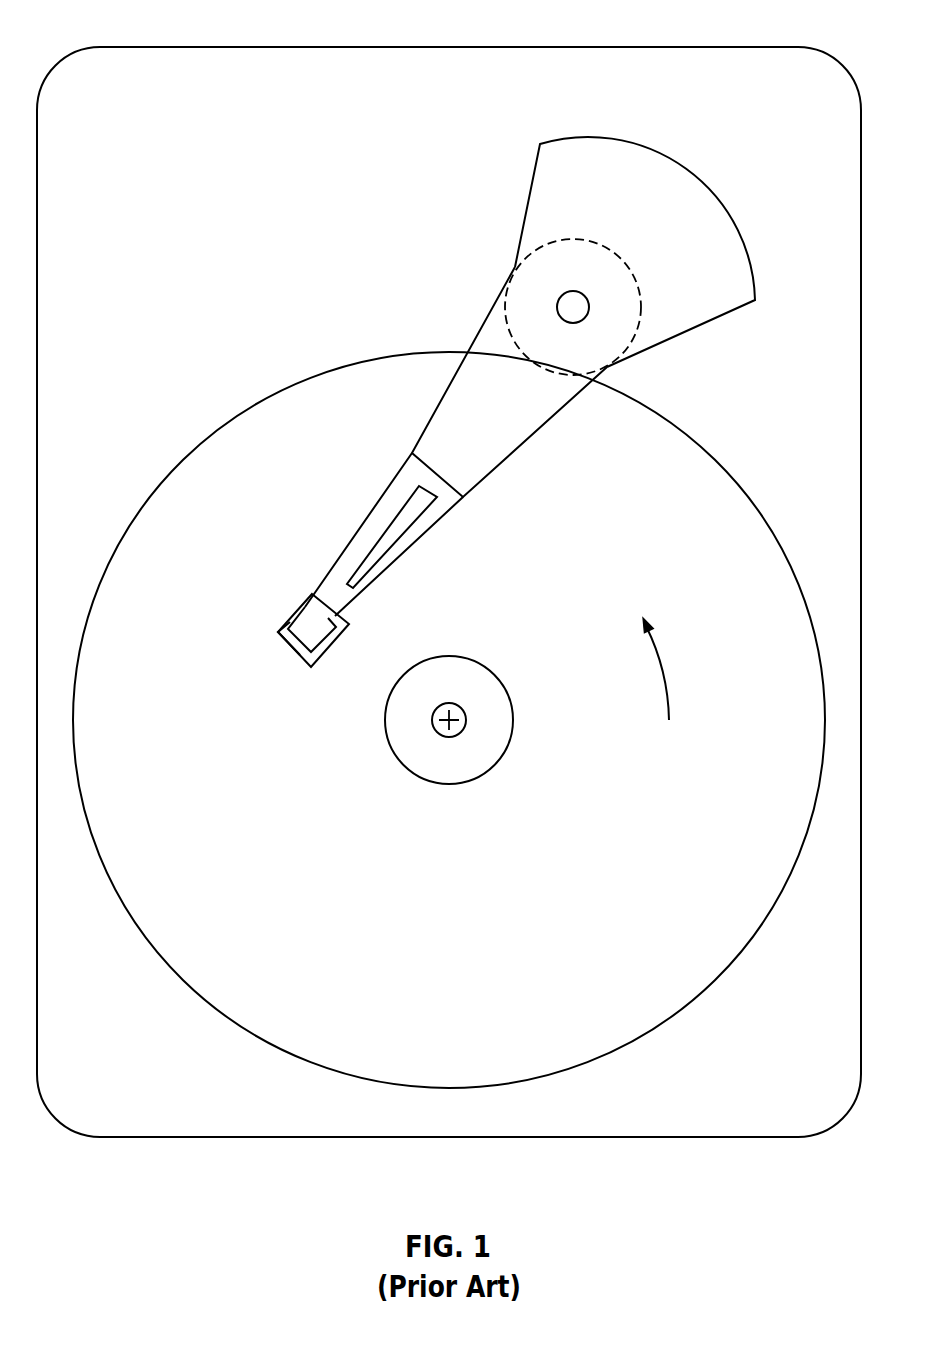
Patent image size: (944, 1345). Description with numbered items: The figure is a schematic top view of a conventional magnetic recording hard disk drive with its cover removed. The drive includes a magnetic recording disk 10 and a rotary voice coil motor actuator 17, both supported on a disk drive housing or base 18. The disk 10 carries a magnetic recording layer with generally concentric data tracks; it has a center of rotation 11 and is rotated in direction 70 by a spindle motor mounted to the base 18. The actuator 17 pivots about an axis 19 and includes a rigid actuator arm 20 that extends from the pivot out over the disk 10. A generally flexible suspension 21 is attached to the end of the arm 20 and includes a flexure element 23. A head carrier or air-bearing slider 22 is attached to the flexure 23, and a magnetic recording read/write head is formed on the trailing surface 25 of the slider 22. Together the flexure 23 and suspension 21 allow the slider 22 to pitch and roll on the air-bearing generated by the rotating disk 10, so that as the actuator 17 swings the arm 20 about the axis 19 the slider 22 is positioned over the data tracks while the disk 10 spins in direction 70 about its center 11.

The magnetic recording disk 10 is at (694, 1000).
The center of rotation 11 is at (466, 708).
The rotary voice coil motor (VCM) actuator 17 is at (687, 170).
The disk drive housing or base 18 is at (730, 47).
The axis 19 is at (570, 304).
The rigid actuator arm 20 is at (443, 403).
The suspension 21 is at (397, 492).
The air-bearing slider 22 is at (307, 603).
The flexure element 23 is at (322, 636).
The trailing surface 25 is at (285, 643).
The direction 70 is at (669, 687).